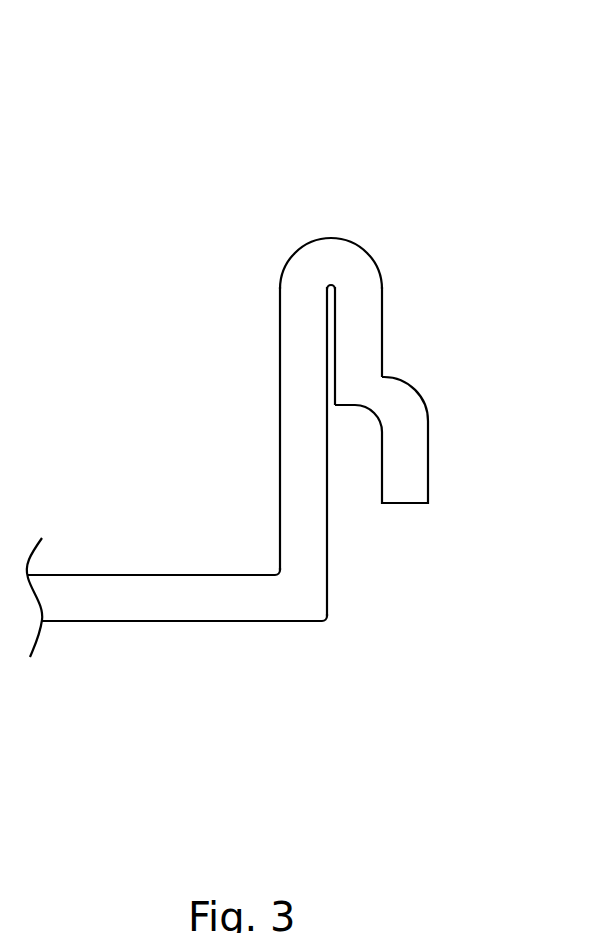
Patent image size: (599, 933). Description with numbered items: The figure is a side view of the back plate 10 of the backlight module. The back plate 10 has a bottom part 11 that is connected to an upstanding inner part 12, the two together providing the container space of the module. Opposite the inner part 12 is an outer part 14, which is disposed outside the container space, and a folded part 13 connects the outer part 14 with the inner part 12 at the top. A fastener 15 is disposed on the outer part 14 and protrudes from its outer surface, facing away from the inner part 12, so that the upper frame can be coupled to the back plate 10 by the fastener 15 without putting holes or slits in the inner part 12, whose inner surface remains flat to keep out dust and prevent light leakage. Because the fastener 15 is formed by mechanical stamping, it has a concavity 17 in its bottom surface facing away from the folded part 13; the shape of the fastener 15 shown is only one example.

The back plate 10 is at (318, 45).
The bottom part 11 is at (171, 605).
The inner part 12 is at (305, 478).
The folded part 13 is at (328, 260).
The outer part 14 is at (360, 328).
The fastener 15 is at (412, 458).
The concavity 17 is at (353, 510).